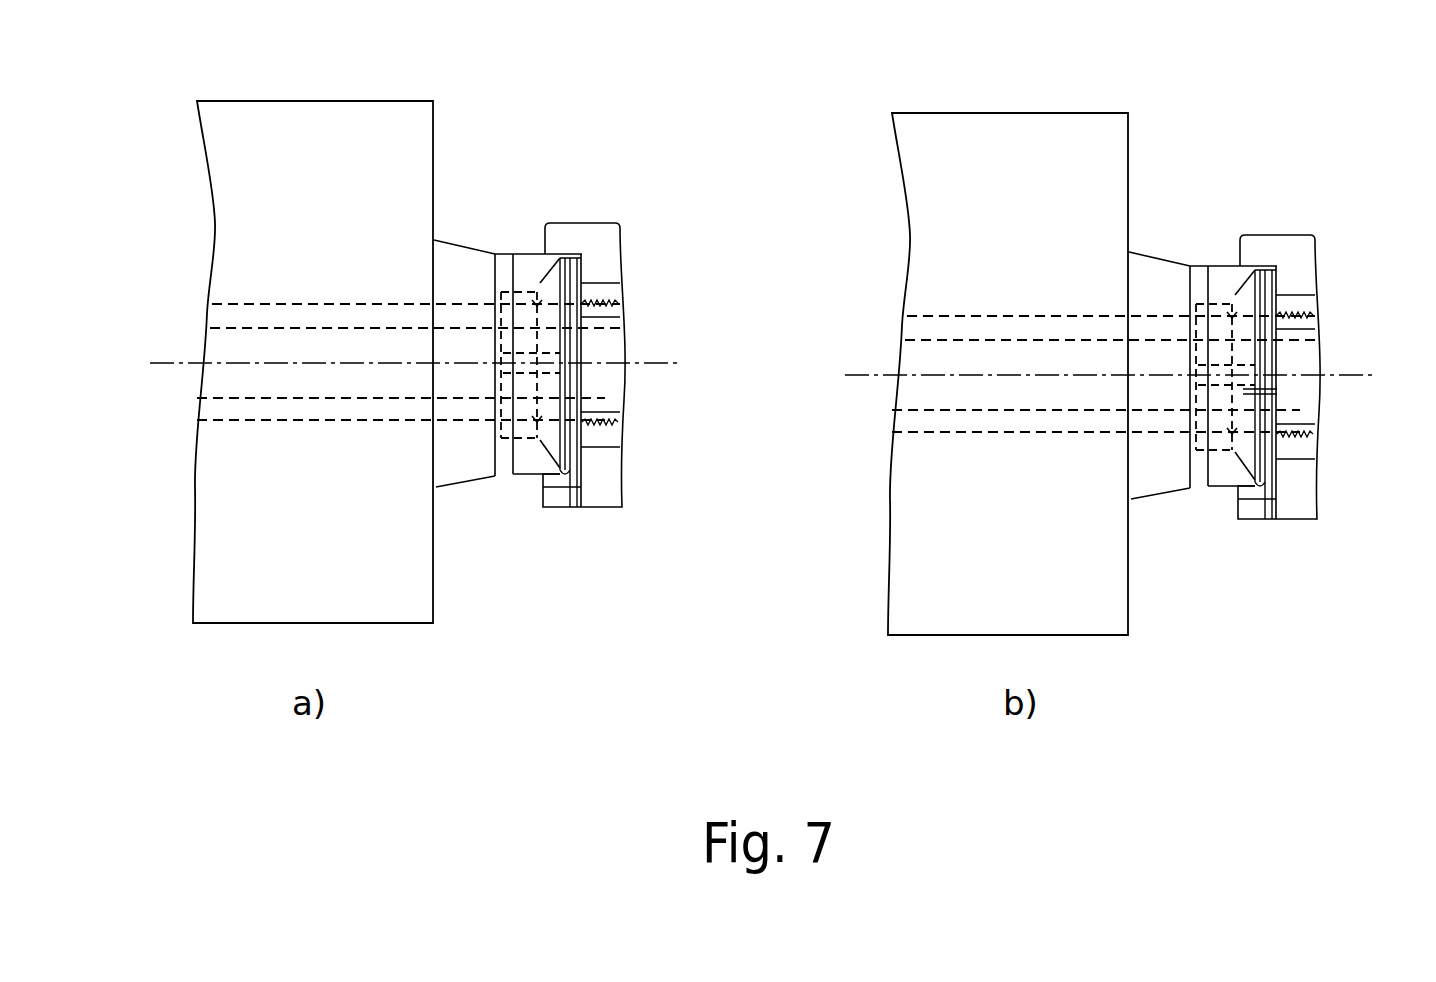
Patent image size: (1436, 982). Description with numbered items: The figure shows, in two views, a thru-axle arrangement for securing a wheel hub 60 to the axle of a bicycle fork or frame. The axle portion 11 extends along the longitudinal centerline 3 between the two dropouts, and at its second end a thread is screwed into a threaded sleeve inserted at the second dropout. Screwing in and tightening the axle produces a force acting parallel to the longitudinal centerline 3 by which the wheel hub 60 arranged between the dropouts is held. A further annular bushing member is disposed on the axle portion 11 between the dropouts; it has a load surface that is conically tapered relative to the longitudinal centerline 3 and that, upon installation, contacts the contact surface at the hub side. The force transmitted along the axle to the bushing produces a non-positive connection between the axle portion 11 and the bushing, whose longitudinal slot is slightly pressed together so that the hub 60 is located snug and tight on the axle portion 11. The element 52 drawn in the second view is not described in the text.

The longitudinal centerline 3 is at (168, 363).
The axle portion 11 is at (247, 421).
The aperture 52 is at (1339, 364).
The wheel hub 60 is at (302, 127).